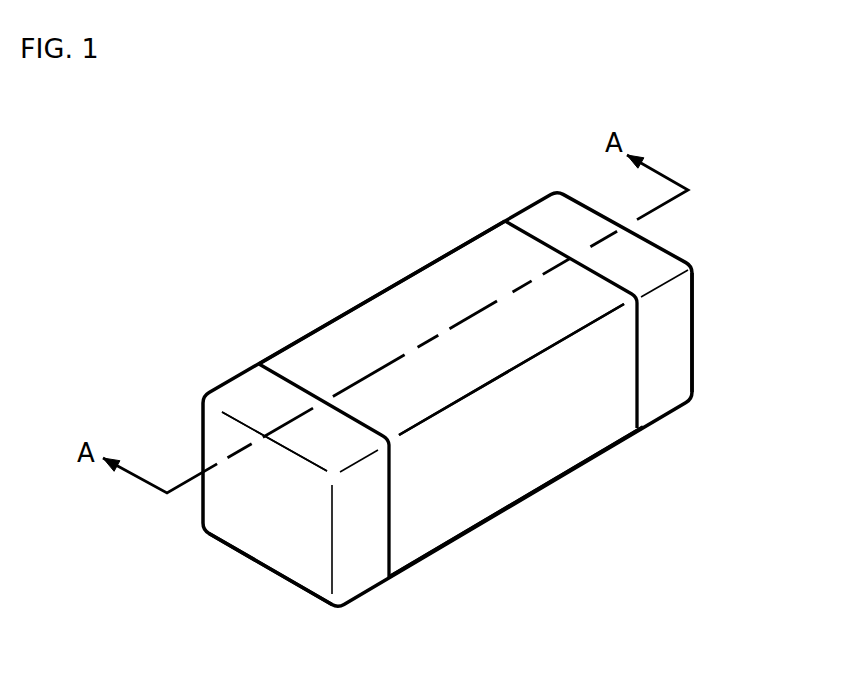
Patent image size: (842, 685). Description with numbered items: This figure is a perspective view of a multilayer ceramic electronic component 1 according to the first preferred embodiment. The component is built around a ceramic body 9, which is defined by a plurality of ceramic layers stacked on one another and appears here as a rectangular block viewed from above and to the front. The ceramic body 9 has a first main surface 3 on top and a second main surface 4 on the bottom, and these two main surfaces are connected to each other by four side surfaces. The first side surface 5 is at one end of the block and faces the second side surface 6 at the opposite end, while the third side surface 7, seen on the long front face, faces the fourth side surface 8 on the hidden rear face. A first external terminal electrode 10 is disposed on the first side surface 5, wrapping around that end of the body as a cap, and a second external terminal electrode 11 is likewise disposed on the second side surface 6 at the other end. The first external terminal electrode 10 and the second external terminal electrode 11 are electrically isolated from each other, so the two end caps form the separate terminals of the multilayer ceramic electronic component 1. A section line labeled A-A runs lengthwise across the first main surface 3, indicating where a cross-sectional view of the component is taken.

The multilayer ceramic electronic component 1 is at (207, 144).
The first main surface 3 is at (362, 318).
The second main surface 4 is at (432, 520).
The first side surface 5 is at (280, 517).
The second side surface 6 is at (670, 328).
The third side surface 7 is at (510, 473).
The fourth side surface 8 is at (323, 360).
The ceramic body 9 is at (422, 272).
The first external terminal electrode 10 is at (297, 575).
The second external terminal electrode 11 is at (695, 370).